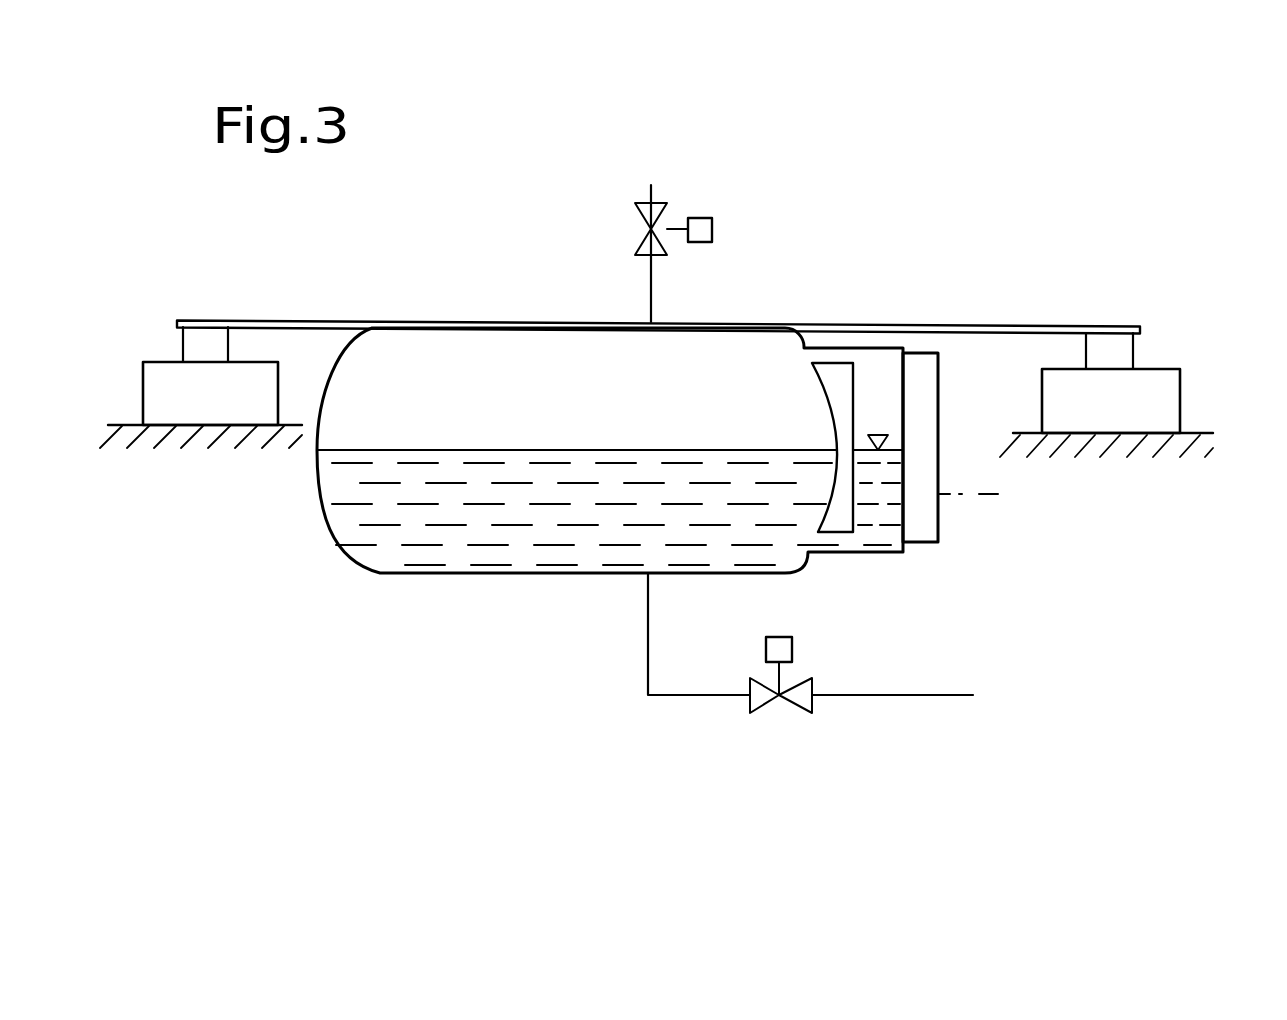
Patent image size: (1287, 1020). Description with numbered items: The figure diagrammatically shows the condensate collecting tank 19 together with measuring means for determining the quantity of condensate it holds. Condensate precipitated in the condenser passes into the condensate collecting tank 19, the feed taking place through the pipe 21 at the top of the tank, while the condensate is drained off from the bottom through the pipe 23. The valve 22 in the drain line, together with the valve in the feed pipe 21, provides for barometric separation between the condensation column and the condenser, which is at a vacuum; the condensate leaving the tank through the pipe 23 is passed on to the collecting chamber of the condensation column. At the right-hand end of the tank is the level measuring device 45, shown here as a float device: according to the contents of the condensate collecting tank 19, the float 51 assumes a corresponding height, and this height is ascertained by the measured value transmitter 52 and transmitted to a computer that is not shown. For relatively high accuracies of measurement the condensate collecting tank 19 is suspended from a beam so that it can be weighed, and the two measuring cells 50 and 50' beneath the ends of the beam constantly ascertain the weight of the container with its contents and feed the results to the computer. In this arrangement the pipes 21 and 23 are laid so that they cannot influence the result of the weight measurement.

The condensate collecting tank 19 is at (443, 515).
The pipe 21 is at (651, 287).
The valve 22 is at (798, 693).
The pipe 23 is at (927, 695).
The level measuring device 45 is at (872, 555).
The measuring cell 50 is at (201, 438).
The measuring cell 50' is at (1128, 395).
The float 51 is at (878, 435).
The measured value transmitter 52 is at (982, 497).